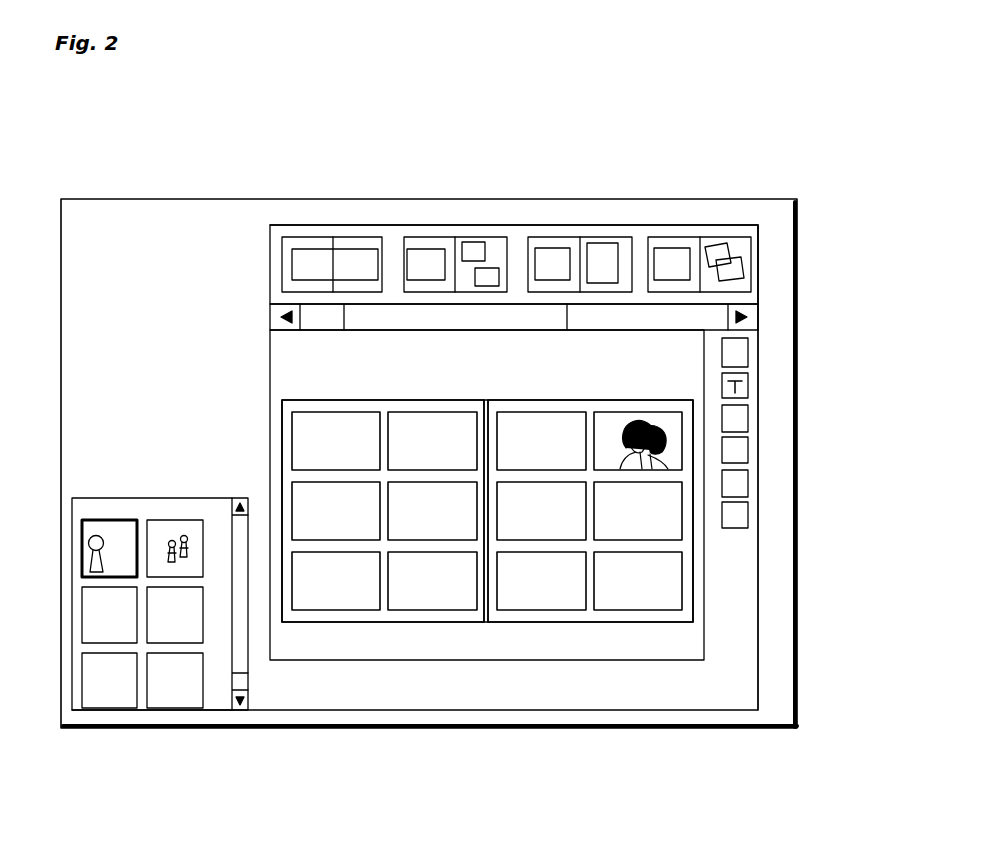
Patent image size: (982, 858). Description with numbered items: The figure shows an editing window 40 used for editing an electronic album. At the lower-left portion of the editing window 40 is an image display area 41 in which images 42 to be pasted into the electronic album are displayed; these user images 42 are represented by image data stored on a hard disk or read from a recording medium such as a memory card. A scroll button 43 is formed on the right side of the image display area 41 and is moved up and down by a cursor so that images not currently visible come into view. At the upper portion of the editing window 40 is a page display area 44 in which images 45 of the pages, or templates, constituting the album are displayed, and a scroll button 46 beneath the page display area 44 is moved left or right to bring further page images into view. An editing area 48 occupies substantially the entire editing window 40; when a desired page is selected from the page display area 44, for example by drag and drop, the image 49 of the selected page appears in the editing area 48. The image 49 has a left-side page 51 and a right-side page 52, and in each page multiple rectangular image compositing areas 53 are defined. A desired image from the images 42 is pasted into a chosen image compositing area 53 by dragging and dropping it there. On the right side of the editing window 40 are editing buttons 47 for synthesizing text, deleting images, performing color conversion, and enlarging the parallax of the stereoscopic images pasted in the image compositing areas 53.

The editing window 40 is at (194, 217).
The image display area 41 is at (193, 508).
The images 42 is at (165, 528).
The scroll button 43 is at (240, 677).
The page display area 44 is at (520, 237).
The images of pages 45 is at (362, 243).
The scroll button 46 is at (512, 317).
The editing buttons 47 is at (778, 352).
The editing area 48 is at (660, 642).
The image of the selected page 49 is at (443, 390).
The left-side page 51 is at (362, 615).
The right-side page 52 is at (540, 617).
The image compositing areas 53 is at (413, 428).